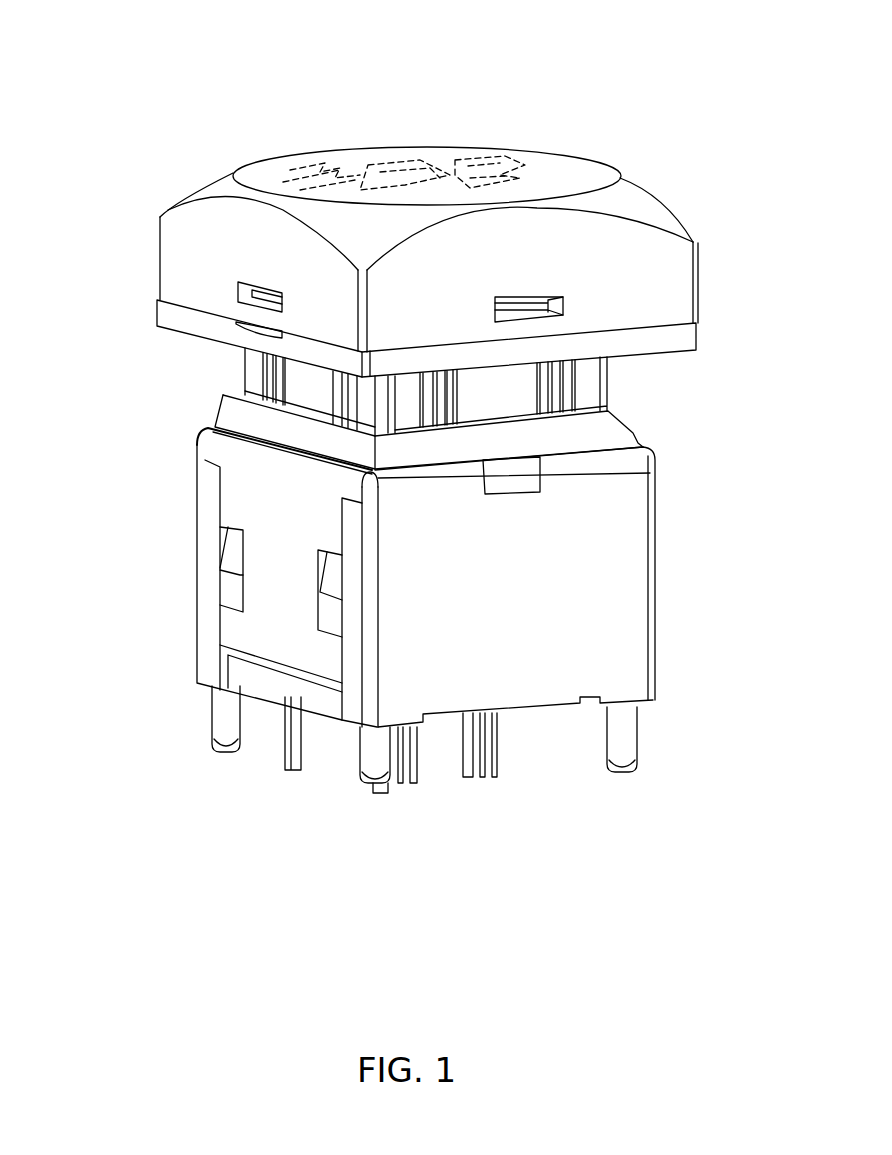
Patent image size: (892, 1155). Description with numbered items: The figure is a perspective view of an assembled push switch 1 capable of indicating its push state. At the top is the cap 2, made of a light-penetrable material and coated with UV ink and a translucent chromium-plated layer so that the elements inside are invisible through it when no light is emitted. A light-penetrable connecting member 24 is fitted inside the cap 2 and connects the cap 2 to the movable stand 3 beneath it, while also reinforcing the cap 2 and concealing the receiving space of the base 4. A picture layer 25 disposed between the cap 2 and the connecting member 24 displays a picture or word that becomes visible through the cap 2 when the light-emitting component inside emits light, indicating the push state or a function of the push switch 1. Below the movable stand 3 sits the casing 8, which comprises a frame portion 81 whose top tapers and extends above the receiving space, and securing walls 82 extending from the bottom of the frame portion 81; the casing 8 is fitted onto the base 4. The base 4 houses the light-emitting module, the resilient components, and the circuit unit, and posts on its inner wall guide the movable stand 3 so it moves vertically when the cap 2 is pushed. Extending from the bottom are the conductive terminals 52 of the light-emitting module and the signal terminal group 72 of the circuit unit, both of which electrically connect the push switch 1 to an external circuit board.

The push switch 1 is at (116, 86).
The cap 2 is at (182, 247).
The picture layer 25 is at (500, 165).
The connecting member 24 is at (178, 313).
The movable stand 3 is at (257, 378).
The casing 8 is at (67, 425).
The frame portion 81 is at (230, 437).
The securing walls 82 is at (240, 490).
The base 4 is at (225, 588).
The signal terminal group 72 is at (287, 765).
The conductive terminals 52 is at (492, 755).